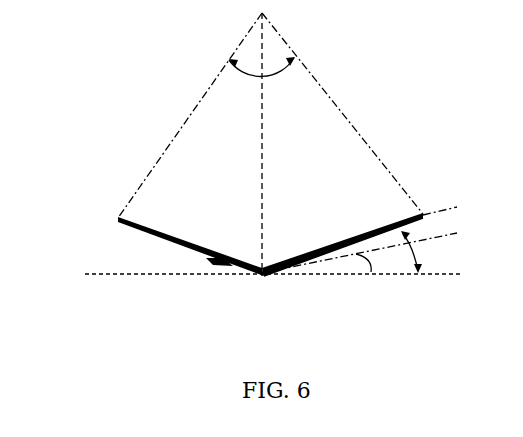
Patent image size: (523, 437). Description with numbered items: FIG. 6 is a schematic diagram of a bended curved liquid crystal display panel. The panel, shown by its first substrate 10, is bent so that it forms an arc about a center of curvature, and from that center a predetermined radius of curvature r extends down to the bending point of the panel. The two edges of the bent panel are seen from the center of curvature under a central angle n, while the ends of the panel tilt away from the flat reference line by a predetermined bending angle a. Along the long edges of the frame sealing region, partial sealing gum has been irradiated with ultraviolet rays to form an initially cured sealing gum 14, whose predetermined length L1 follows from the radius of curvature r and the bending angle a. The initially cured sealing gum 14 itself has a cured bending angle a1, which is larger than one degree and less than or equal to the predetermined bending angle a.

The first substrate 10 is at (162, 240).
The initially cured sealing gum 14 is at (298, 275).
The predetermined radius of curvature r is at (269, 144).
The central angle n is at (262, 78).
The predetermined bending angle a is at (429, 240).
The cured bending angle a1 is at (359, 253).